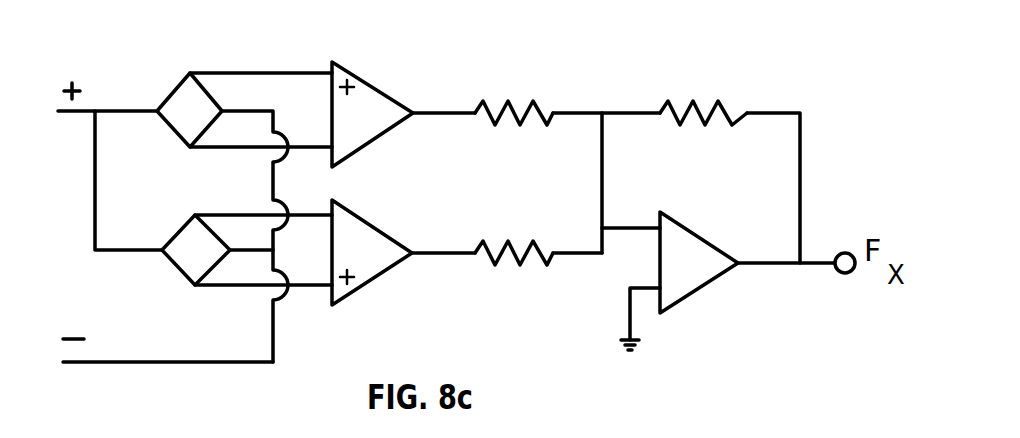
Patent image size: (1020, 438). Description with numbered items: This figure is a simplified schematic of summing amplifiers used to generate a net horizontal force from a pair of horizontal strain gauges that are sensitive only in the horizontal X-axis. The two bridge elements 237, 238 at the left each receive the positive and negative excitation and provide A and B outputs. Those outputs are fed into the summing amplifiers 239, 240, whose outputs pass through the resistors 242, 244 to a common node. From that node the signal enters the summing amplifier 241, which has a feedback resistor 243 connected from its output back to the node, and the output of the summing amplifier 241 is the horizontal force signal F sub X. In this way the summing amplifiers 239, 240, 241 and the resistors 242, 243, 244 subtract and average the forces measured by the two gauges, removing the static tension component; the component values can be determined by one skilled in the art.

The first strain gauge bridge 237 is at (215, 102).
The second strain gauge bridge 238 is at (188, 280).
The summing amplifier 239 is at (410, 63).
The summing amplifier 240 is at (427, 213).
The summing amplifier 241 is at (718, 240).
The resistor 242 is at (542, 102).
The resistor 243 is at (722, 100).
The resistor 244 is at (483, 262).